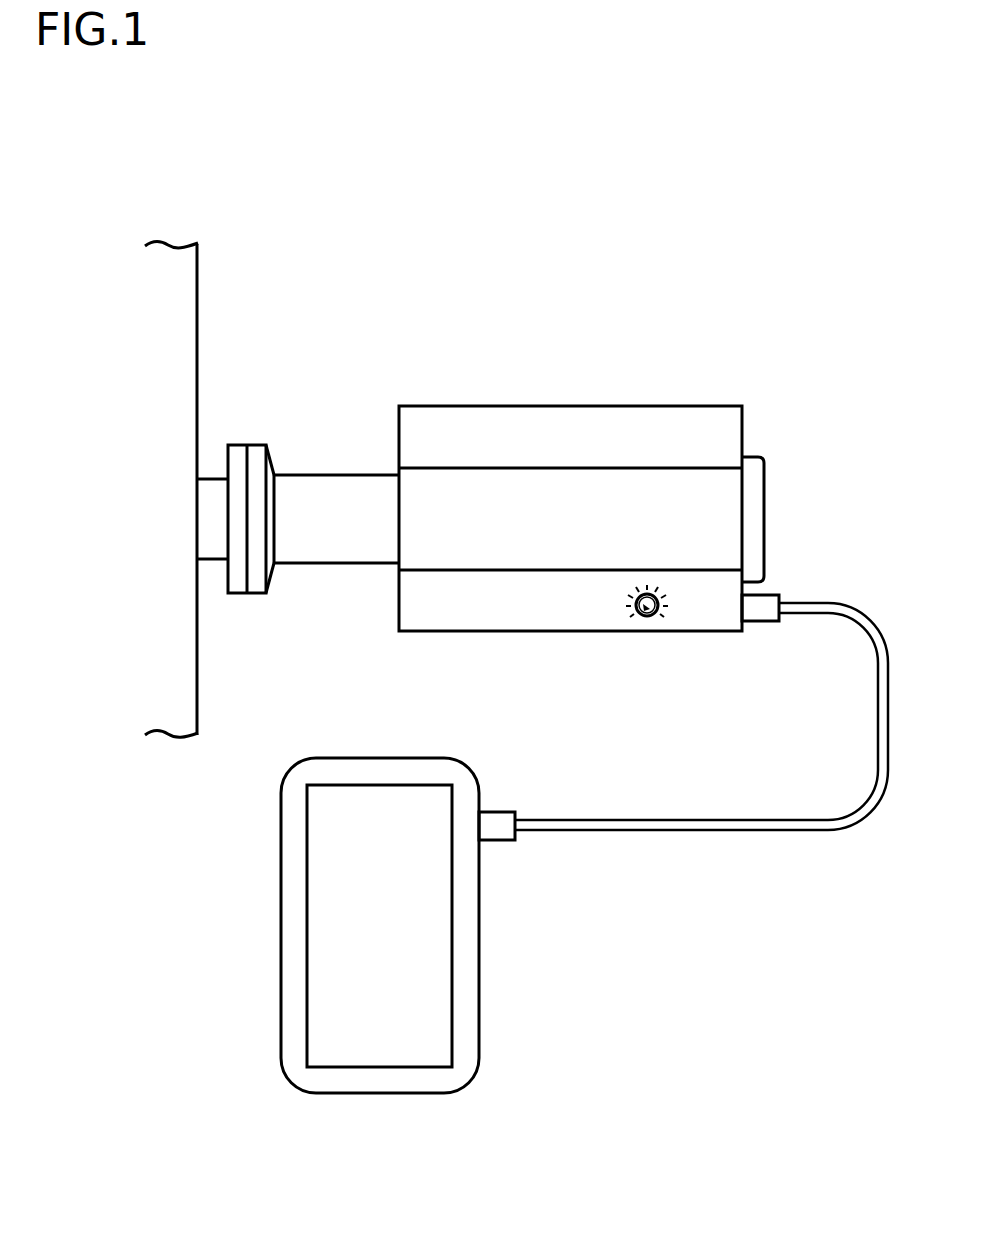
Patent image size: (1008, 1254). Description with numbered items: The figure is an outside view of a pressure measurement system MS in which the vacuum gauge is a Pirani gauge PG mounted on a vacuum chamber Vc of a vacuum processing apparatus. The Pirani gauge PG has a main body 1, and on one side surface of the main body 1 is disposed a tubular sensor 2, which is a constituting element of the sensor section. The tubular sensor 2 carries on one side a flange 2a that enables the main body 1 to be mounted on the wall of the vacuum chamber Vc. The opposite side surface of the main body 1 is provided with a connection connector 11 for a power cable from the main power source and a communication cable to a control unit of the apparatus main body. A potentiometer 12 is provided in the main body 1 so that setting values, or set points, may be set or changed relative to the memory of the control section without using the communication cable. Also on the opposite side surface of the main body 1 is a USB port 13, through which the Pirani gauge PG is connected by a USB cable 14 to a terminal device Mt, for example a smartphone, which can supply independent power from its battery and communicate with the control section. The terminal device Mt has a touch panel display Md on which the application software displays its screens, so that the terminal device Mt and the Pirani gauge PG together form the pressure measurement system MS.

The main body 1 is at (728, 622).
The tubular sensor 2 is at (349, 456).
The flange 2a is at (270, 463).
The connection connector 11 is at (758, 533).
The potentiometer 12 is at (650, 614).
The USB port 13 is at (765, 617).
The USB cable 14 is at (668, 826).
The vacuum chamber Vc is at (180, 268).
The Pirani gauge PG is at (752, 418).
The touch panel display Md is at (440, 957).
The terminal device Mt is at (482, 1028).
The pressure measurement system MS is at (716, 889).